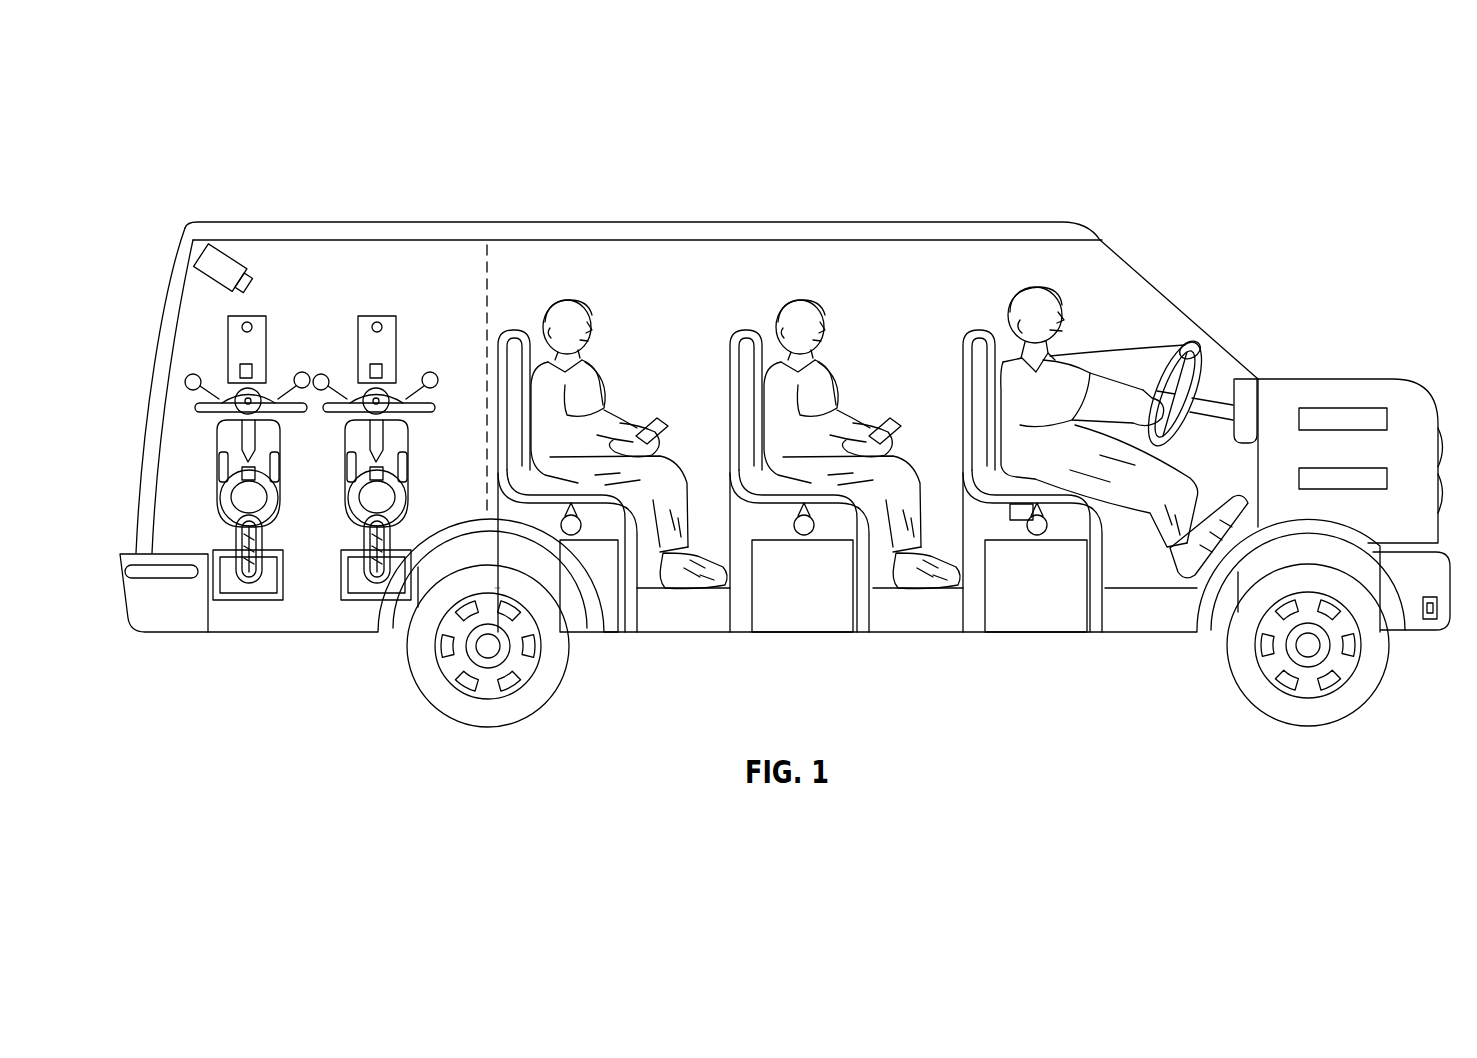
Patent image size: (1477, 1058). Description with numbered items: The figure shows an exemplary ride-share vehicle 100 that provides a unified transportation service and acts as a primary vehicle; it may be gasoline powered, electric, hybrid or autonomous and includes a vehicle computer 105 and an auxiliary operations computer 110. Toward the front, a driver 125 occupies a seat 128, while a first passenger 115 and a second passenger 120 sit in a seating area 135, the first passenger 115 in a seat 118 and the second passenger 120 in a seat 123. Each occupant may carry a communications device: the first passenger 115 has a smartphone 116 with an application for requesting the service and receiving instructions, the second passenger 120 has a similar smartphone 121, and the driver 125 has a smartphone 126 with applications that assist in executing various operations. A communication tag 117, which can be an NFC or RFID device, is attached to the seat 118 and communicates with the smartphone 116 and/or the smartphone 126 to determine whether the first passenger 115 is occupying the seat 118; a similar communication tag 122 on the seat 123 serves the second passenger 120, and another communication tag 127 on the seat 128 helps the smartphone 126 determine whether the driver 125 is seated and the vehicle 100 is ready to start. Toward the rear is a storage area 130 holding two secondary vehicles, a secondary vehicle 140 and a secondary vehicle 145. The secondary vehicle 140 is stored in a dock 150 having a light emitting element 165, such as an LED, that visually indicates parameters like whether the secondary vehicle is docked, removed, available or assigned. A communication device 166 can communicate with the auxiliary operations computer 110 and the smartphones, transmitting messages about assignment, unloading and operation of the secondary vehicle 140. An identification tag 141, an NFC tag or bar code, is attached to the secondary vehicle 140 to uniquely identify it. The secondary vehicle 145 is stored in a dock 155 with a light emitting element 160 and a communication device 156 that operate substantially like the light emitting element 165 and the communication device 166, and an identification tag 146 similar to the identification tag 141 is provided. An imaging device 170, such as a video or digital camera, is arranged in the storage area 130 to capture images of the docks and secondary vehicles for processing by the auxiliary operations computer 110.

The vehicle 100 is at (160, 115).
The vehicle computer 105 is at (1344, 432).
The auxiliary operations computer 110 is at (1344, 490).
The first passenger 115 is at (612, 314).
The smartphone 116 is at (660, 420).
The communication tag 117 is at (577, 538).
The seat 118 is at (506, 331).
The second passenger 120 is at (836, 286).
The smartphone 121 is at (893, 422).
The communication tag 122 is at (805, 543).
The seat 123 is at (729, 374).
The driver 125 is at (1092, 281).
The smartphone 126 is at (1150, 390).
The communication tag 127 is at (1037, 543).
The seat 128 is at (962, 384).
The storage area 130 is at (453, 280).
The seating area 135 is at (570, 275).
The secondary vehicle 140 is at (198, 436).
The identification tag 141 is at (218, 493).
The secondary vehicle 145 is at (424, 456).
The identification tag 146 is at (346, 493).
The dock 150 is at (222, 338).
The dock 155 is at (404, 334).
The communication device 156 is at (370, 366).
The light emitting element 160 is at (374, 322).
The light emitting element 165 is at (250, 321).
The communication device 166 is at (240, 368).
The imaging device 170 is at (244, 246).